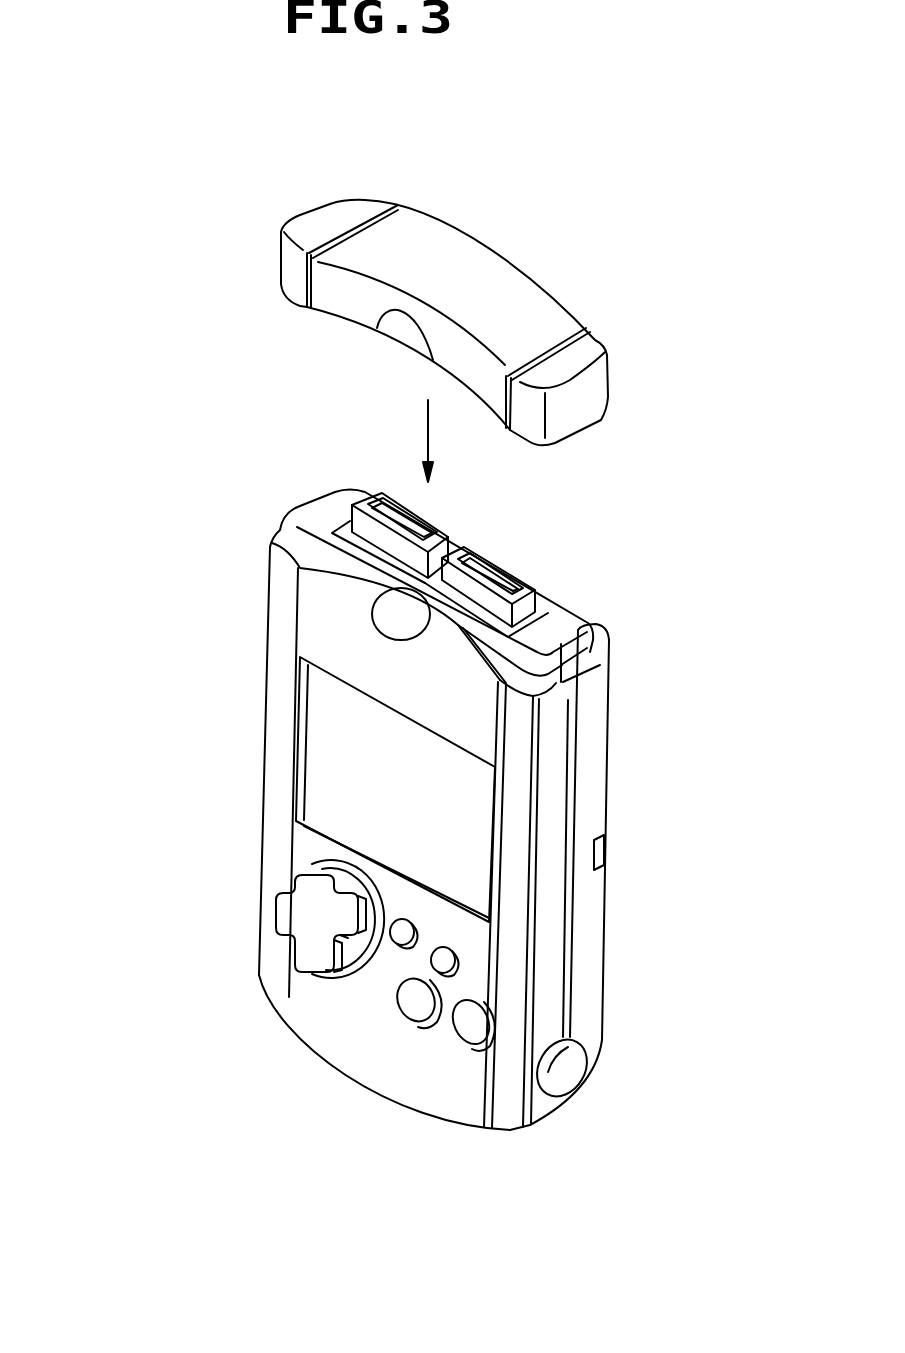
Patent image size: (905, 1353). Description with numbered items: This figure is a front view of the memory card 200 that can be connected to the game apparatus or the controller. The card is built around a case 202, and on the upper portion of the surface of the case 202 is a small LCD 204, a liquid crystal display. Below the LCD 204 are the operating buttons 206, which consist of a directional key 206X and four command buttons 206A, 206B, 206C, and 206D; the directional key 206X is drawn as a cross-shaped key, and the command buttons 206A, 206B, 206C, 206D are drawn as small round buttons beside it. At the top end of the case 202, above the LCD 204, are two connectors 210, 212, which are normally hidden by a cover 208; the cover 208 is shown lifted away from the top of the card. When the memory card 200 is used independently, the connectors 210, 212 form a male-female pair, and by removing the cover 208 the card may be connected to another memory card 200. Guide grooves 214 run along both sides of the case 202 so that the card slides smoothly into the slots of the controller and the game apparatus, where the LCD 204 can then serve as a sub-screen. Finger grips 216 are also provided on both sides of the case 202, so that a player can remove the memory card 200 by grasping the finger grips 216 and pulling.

The memory card 200 is at (224, 563).
The case 202 is at (434, 810).
The LCD 204 is at (322, 750).
The operating buttons 206 is at (289, 1068).
The directional key 206X is at (291, 920).
The command button 206A is at (393, 945).
The command button 206B is at (432, 962).
The command button 206C is at (415, 1013).
The command button 206D is at (400, 1119).
The cover 208 is at (290, 275).
The connector 210 is at (381, 493).
The connector 212 is at (496, 562).
The guide groove 214 is at (576, 781).
The finger grip 216 is at (567, 1075).